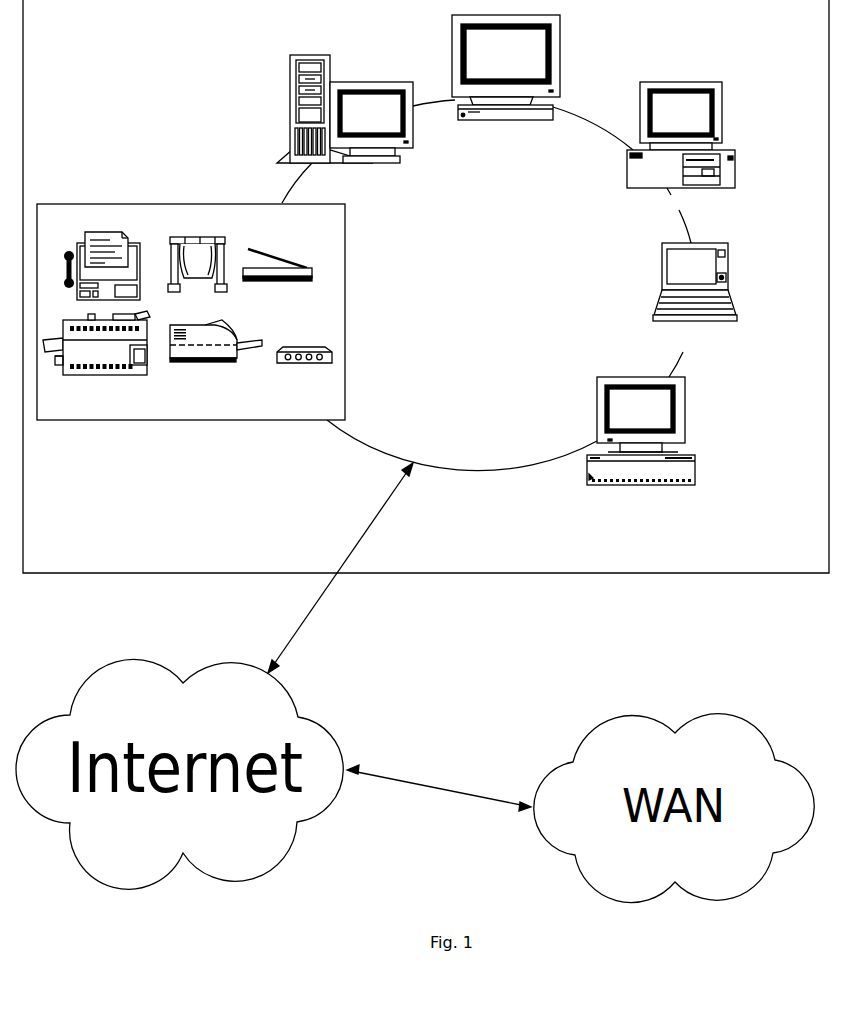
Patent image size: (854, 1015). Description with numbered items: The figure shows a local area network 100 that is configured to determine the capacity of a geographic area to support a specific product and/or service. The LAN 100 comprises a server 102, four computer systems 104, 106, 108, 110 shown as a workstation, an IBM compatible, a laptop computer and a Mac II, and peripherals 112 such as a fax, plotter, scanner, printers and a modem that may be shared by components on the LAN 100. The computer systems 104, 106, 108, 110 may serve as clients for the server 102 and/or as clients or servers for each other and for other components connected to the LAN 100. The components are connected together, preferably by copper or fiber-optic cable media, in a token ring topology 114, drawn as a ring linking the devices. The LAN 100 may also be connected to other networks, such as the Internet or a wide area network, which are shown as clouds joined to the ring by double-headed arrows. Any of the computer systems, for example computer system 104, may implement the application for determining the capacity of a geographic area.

The local area network 100 is at (452, 570).
The server 102 is at (345, 119).
The computer system 104 is at (506, 78).
The computer system 106 is at (684, 145).
The computer system 108 is at (695, 296).
The computer system 110 is at (641, 441).
The peripherals 112 is at (202, 414).
The token ring topology 114 is at (526, 290).